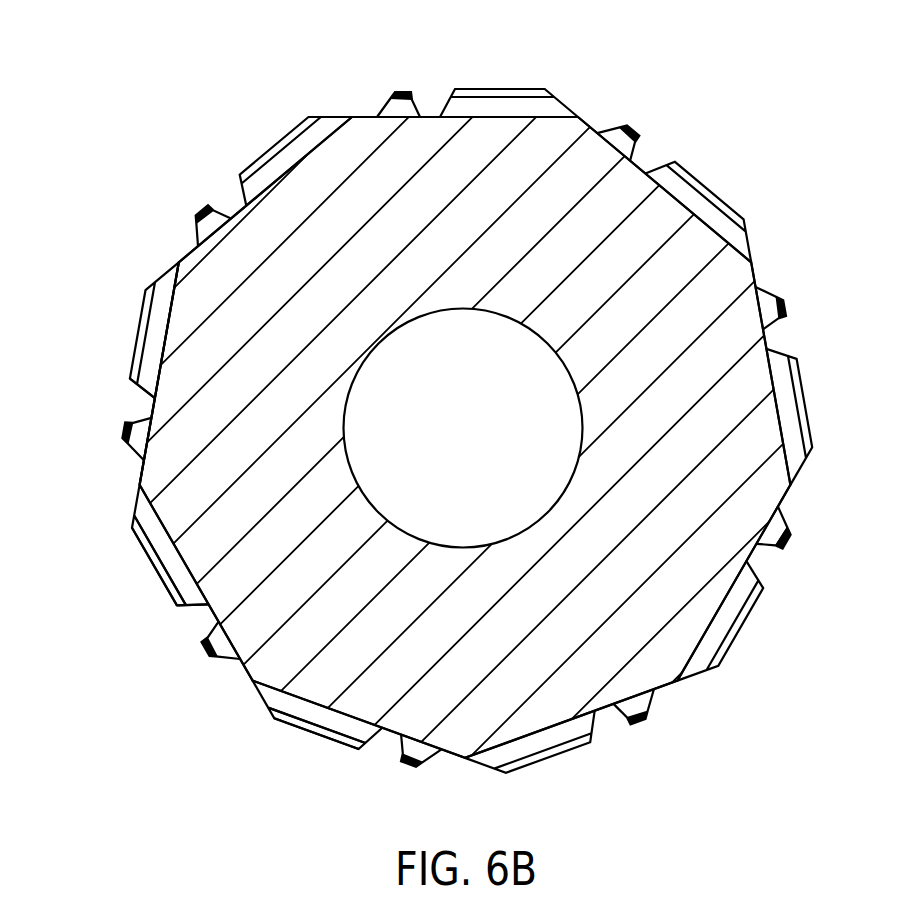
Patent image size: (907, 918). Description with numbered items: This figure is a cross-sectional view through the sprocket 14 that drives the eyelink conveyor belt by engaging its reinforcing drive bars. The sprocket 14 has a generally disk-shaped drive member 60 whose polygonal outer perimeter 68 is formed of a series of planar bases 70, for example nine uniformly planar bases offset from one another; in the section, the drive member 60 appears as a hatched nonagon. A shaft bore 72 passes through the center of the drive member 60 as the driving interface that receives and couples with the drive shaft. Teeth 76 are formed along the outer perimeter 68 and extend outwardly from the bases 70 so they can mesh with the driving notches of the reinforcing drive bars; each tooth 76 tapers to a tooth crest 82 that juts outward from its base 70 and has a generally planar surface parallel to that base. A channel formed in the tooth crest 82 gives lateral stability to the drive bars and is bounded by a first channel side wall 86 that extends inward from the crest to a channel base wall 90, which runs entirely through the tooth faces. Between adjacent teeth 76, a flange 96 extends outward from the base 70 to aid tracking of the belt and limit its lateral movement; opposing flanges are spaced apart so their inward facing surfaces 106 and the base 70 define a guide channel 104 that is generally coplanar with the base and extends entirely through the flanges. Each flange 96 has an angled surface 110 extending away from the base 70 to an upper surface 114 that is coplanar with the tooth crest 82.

The sprocket 14 is at (514, 81).
The drive member 60 is at (343, 203).
The outer perimeter 68 is at (137, 468).
The planar base 70 is at (363, 115).
The shaft bore 72 is at (448, 528).
The tooth 76 is at (398, 90).
The tooth crest 82 is at (783, 540).
The first channel side wall 86 is at (397, 93).
The channel base wall 90 is at (197, 207).
The flange 96 is at (140, 552).
The guide channel 104 is at (155, 573).
The inward facing surface 106 is at (300, 716).
The angled surface 110 is at (137, 383).
The upper surface 114 is at (298, 713).